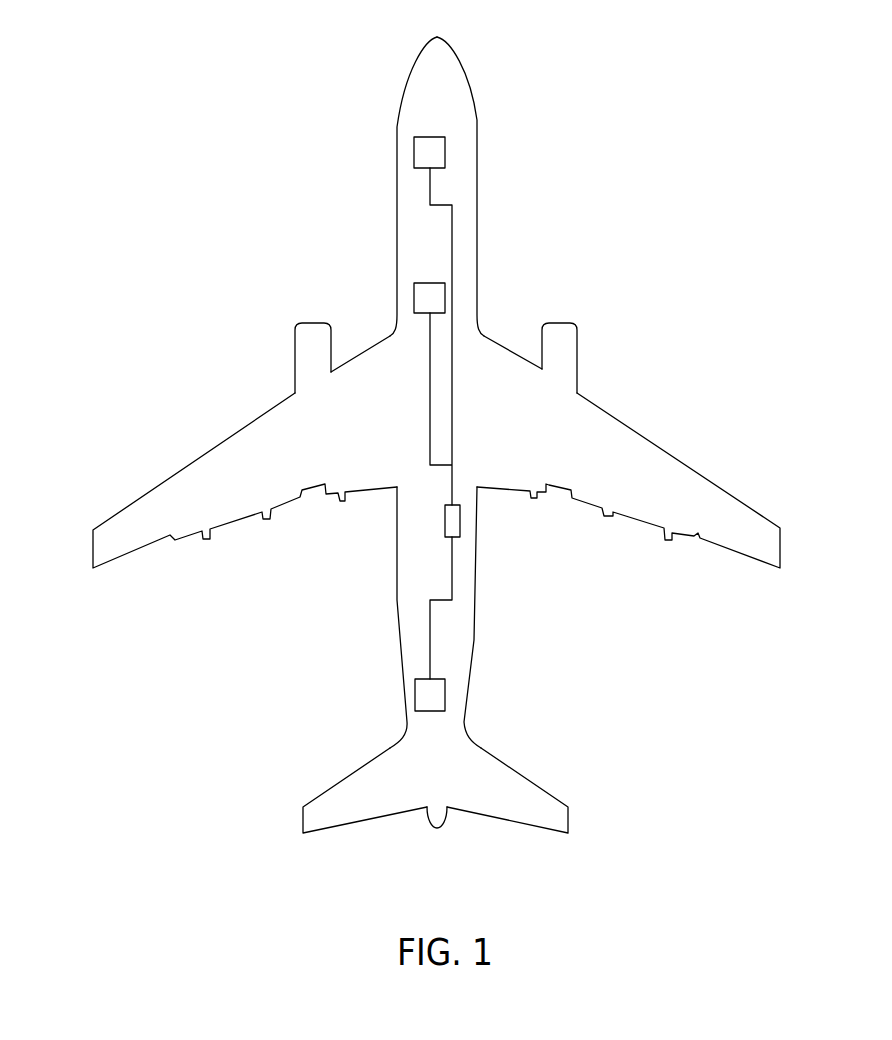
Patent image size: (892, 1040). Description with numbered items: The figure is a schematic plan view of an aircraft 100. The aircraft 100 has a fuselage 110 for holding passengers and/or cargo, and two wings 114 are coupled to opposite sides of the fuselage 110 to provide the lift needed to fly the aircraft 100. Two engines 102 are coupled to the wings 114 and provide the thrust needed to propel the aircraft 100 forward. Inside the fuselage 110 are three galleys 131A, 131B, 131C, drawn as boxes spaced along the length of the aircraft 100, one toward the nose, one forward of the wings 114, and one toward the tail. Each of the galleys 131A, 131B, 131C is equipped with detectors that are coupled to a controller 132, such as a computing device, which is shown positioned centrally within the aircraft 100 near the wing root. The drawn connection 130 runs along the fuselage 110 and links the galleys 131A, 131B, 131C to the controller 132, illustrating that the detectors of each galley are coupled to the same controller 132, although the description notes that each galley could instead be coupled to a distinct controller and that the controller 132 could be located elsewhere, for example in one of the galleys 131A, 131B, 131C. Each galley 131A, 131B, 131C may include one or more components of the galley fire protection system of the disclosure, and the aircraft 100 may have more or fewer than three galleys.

The aircraft 100 is at (434, 420).
The fuselage 110 is at (397, 200).
The engines 102 is at (295, 345).
The wings 114 is at (207, 452).
The network bus 130 is at (456, 352).
The galley 131A is at (435, 153).
The galley 131B is at (438, 292).
The galley 131C is at (438, 697).
The controller 132 is at (455, 518).